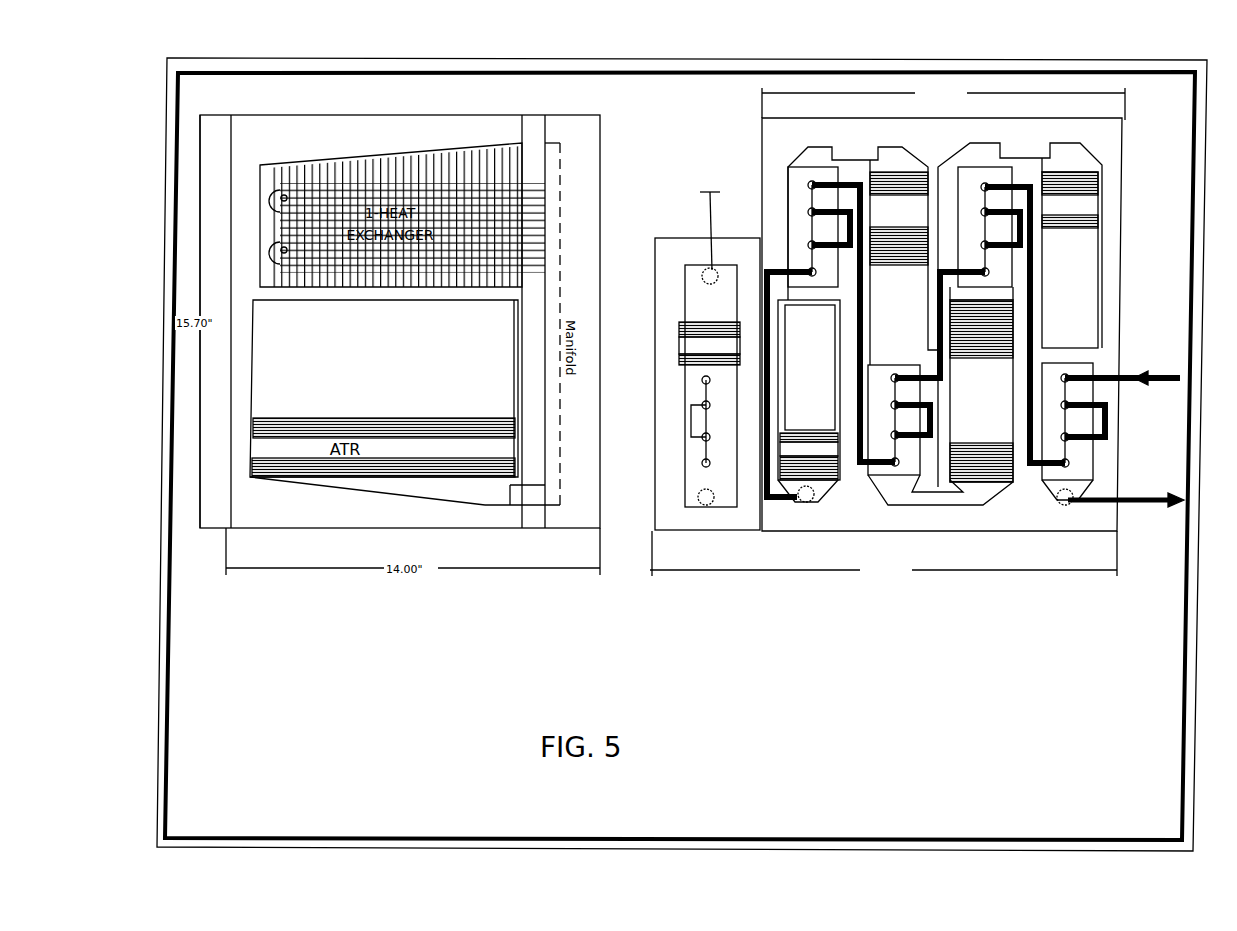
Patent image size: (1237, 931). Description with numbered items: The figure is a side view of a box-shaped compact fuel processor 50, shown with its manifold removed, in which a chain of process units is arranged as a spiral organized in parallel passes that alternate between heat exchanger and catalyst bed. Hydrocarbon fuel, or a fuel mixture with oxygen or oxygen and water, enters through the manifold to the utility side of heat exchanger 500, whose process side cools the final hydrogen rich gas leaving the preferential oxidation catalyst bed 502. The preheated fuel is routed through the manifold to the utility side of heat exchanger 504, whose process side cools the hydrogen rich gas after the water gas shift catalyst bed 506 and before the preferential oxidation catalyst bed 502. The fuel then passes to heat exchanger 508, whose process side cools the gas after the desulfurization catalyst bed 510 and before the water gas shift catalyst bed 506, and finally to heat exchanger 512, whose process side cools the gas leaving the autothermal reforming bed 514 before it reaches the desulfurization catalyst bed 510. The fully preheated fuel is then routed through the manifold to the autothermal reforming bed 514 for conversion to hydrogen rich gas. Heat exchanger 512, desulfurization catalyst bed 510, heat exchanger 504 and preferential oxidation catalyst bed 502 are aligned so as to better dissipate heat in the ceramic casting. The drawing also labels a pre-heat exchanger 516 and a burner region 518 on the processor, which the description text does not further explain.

The box-shaped fuel processor 50 is at (917, 329).
The heat exchanger 500 is at (1083, 461).
The preferential oxidation catalyst bed 502 is at (1095, 222).
The heat exchanger 504 is at (957, 172).
The water gas shift catalyst bed 506 is at (995, 478).
The heat exchanger 508 is at (905, 468).
The desulfurization catalyst bed 510 is at (893, 178).
The heat exchanger 512 is at (790, 182).
The autothermal reforming bed 514 is at (832, 467).
The pre-heat exchanger 516 is at (687, 458).
The burner 518 is at (679, 333).